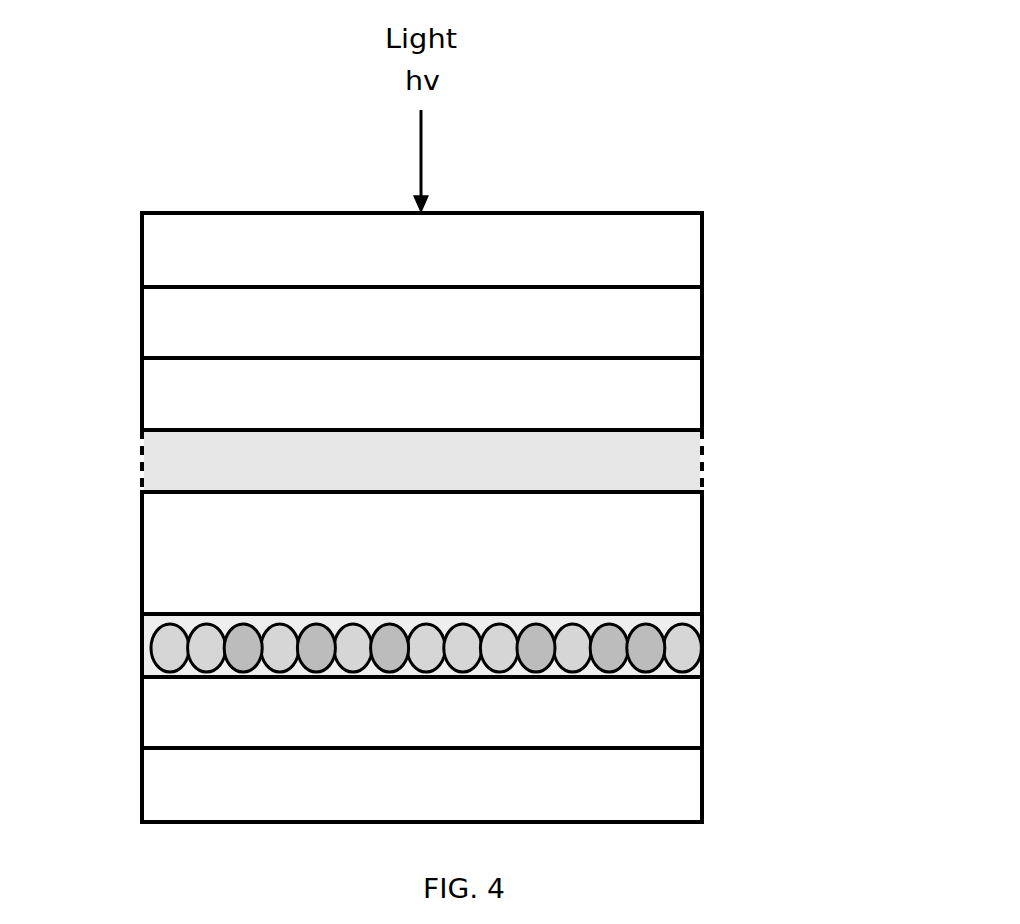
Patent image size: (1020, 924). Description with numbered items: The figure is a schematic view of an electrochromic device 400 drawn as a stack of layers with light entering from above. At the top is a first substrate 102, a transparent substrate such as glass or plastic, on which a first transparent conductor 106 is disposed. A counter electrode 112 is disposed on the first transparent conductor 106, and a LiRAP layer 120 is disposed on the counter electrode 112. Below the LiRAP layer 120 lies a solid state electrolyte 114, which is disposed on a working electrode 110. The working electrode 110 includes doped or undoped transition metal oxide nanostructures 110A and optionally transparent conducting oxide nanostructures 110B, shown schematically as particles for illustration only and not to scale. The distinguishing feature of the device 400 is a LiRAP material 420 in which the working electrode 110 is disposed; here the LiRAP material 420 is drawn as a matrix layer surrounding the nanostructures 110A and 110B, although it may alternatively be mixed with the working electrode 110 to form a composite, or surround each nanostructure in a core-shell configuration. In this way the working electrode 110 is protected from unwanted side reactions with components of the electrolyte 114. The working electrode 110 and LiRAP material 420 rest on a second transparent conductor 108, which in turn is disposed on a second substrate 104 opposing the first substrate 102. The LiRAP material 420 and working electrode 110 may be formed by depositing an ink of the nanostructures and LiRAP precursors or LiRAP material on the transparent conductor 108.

The EC device 400 is at (178, 147).
The first substrate 102 is at (702, 250).
The first transparent conductor 106 is at (702, 307).
The counter electrode 112 is at (702, 395).
The LiRAP layer 120 is at (702, 462).
The solid state electrolyte 114 is at (702, 553).
The LiRAP material 420 is at (702, 613).
The working electrode 110 is at (460, 581).
The transition metal oxide nanostructures 110A is at (155, 650).
The transparent conducting oxide nanostructures 110B is at (240, 635).
The second transparent conductor 108 is at (702, 712).
The second substrate 104 is at (702, 785).